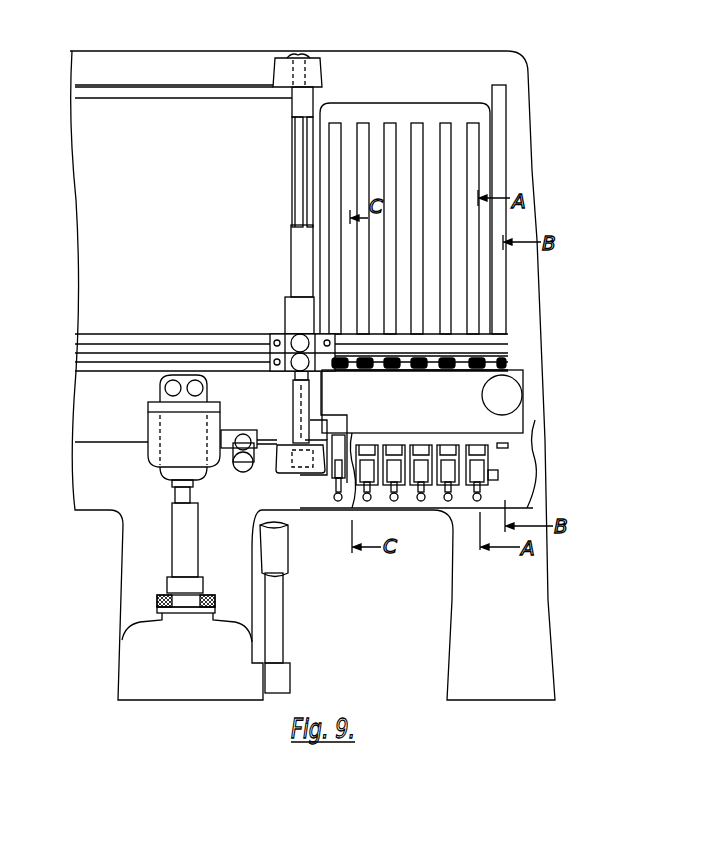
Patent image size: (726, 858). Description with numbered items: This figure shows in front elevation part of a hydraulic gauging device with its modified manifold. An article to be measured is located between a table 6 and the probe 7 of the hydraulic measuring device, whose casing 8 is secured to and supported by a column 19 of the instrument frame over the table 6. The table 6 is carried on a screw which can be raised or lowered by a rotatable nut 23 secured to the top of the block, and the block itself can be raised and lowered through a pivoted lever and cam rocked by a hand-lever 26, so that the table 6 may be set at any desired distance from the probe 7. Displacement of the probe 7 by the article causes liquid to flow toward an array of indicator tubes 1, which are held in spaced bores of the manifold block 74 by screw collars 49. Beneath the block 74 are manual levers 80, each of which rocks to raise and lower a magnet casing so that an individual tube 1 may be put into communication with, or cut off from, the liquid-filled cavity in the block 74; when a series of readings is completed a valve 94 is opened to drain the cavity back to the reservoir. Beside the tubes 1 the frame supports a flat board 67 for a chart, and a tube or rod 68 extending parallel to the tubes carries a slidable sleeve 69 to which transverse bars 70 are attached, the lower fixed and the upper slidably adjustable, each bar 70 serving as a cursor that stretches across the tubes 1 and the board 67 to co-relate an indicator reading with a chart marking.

The indicator tubes 1 is at (478, 155).
The table 6 is at (170, 582).
The probe 7 is at (178, 497).
The casing 8 is at (158, 431).
The column 19 is at (178, 533).
The rotatable nut 23 is at (160, 602).
The hand-lever 26 is at (283, 607).
The screw collars 49 is at (447, 371).
The flat board 67 is at (132, 102).
The tube or rod 68 is at (297, 207).
The slidable sleeve 69 is at (292, 315).
The transverse bar 70 is at (127, 341).
The block 74 is at (478, 430).
The manual levers 80 is at (340, 502).
The valve 94 is at (490, 390).